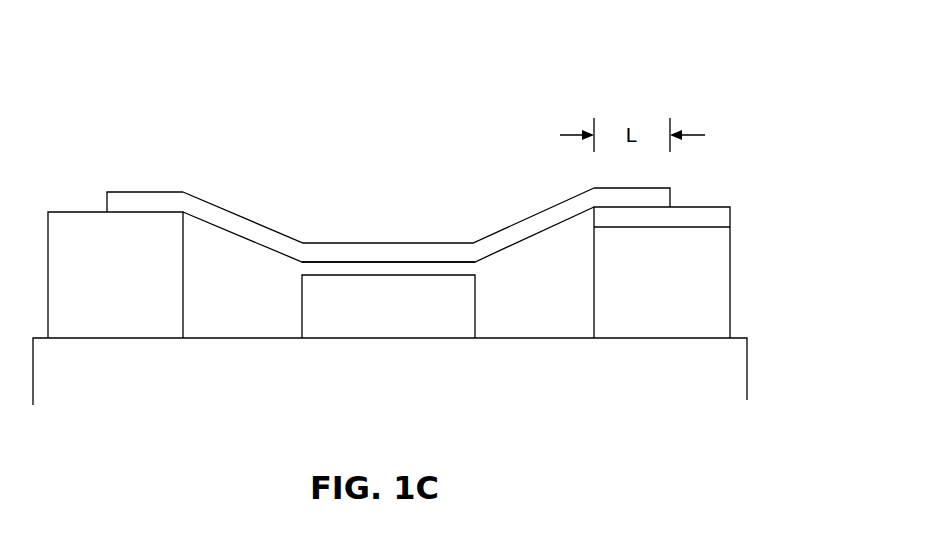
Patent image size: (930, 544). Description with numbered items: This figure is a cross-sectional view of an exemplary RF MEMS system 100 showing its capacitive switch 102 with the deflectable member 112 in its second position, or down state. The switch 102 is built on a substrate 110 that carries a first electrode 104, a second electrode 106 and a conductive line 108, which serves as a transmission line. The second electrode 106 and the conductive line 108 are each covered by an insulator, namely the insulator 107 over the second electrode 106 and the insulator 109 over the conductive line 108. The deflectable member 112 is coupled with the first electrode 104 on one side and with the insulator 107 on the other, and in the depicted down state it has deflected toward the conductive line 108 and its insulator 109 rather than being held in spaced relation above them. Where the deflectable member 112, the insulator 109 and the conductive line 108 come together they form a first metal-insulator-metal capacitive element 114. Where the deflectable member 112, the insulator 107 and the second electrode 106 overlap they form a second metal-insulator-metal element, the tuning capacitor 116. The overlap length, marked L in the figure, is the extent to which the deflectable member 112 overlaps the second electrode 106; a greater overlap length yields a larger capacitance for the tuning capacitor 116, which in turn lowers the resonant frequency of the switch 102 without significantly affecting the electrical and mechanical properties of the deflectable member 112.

The RF MEMS system 100 is at (714, 84).
The capacitive switch 102 is at (141, 172).
The first electrode 104 is at (127, 297).
The second electrode 106 is at (680, 293).
The insulator 107 is at (708, 218).
The conductive line 108 is at (414, 312).
The insulator 109 is at (467, 267).
The substrate 110 is at (246, 394).
The deflectable member 112 is at (260, 232).
The first MIM capacitive element 114 is at (292, 268).
The tuning capacitor 116 is at (680, 197).